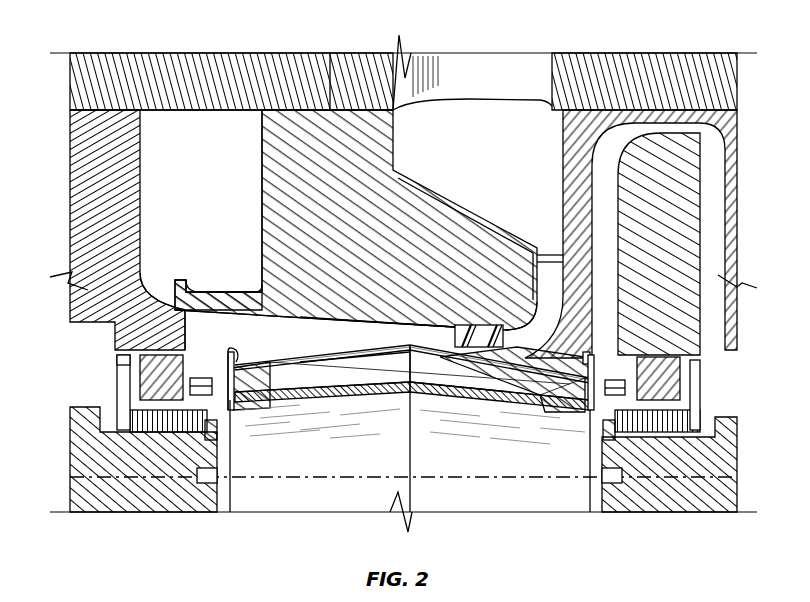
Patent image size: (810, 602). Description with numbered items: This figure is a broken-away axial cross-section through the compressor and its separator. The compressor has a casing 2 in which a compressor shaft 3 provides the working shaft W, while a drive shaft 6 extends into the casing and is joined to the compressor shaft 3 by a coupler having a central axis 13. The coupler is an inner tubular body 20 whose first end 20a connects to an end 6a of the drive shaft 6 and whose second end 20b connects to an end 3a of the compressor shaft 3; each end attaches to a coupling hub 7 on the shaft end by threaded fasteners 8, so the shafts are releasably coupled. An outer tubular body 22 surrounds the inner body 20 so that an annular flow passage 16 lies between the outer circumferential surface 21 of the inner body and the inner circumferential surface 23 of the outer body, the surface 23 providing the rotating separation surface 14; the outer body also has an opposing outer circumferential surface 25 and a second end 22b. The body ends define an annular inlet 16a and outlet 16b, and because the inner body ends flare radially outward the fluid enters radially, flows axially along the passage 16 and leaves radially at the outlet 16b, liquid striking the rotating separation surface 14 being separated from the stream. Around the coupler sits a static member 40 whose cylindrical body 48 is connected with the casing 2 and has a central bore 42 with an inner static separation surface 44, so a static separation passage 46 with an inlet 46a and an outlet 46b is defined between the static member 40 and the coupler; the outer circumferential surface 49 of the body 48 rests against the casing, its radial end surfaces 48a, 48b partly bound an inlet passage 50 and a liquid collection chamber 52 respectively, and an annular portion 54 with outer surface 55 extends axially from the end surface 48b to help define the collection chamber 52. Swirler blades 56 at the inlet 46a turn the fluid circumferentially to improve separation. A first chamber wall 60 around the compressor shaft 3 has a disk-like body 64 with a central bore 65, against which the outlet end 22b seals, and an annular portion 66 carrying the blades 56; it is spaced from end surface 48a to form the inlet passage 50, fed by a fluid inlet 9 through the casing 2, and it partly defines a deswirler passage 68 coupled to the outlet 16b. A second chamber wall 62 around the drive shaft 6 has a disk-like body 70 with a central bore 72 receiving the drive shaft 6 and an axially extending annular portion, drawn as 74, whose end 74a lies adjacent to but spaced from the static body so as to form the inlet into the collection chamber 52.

The casing 2 is at (657, 42).
The compressor shaft 3 is at (675, 494).
The end of compressor shaft 3a is at (601, 500).
The drive shaft 6 is at (147, 494).
The end of drive shaft 6a is at (218, 498).
The coupling hub 7 is at (155, 375).
The threaded fasteners 8 is at (186, 405).
The fluid inlet 9 is at (472, 83).
The central axis 13 is at (506, 478).
The separation surface 14 is at (440, 390).
The flow passage 16 is at (412, 364).
The inlet of flow passage 16a is at (212, 347).
The outlet of flow passage 16b is at (602, 352).
The inner tubular body 20 is at (278, 412).
The first end of inner tubular body 20a is at (147, 422).
The second end of inner tubular body 20b is at (605, 395).
The outer circumferential surface 21 is at (322, 400).
The outer tubular body 22 is at (397, 332).
The second end of outer tubular body 22b is at (587, 352).
The inner circumferential surface 23 is at (355, 395).
The outer circumferential surface 25 is at (382, 346).
The static member 40 is at (300, 106).
The central bore 42 is at (322, 318).
The static separation surface 44 is at (258, 313).
The static separation passage 46 is at (320, 330).
The inlet of static separation passage 46a is at (527, 330).
The outlet of static separation passage 46b is at (218, 338).
The cylindrical body 48 is at (382, 142).
The end surface 48a is at (458, 200).
The end surface 48b is at (262, 188).
The outer circumferential surface 49 is at (362, 106).
The inlet passage 50 is at (473, 175).
The liquid collection chamber 52 is at (201, 190).
The annular portion 54 is at (216, 300).
The outer circumferential surface 55 is at (228, 290).
The swirler blades 56 is at (480, 330).
The first chamber wall 60 is at (610, 106).
The second chamber wall 62 is at (87, 107).
The disk-like body 64 is at (573, 152).
The central bore 65 is at (535, 405).
The annular portion 66 is at (500, 398).
The deswirler passage 68 is at (646, 244).
The disk-like body 70 is at (135, 158).
The central bore 72 is at (118, 366).
The fillet surface 74 is at (148, 312).
The fillet end surface 74a is at (185, 315).
The working shaft W is at (709, 521).